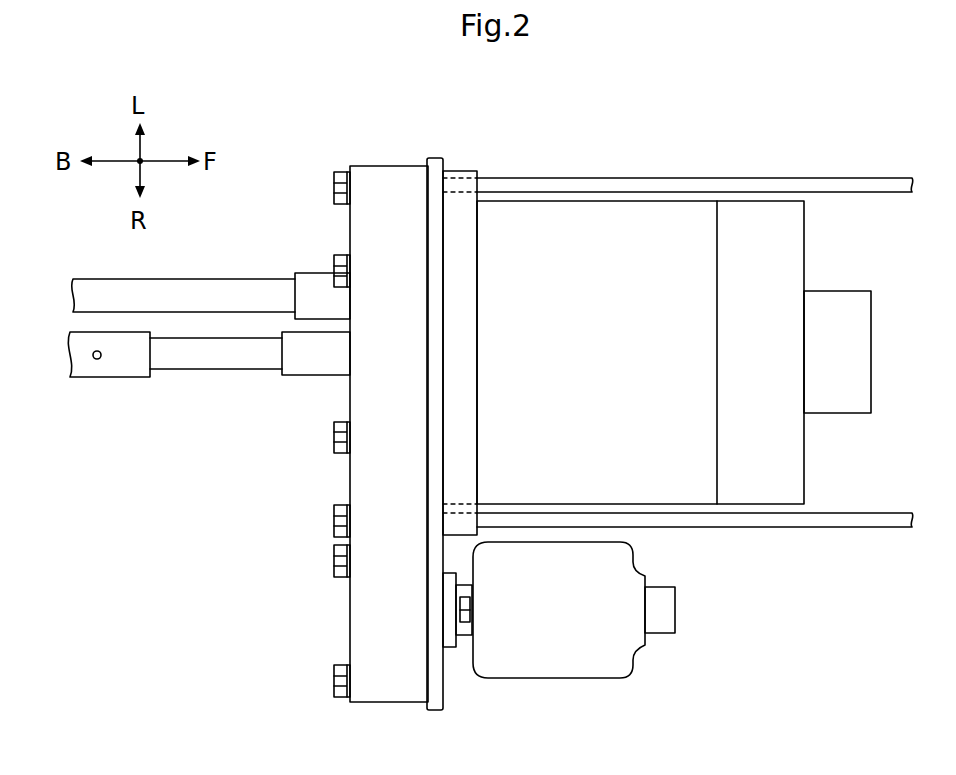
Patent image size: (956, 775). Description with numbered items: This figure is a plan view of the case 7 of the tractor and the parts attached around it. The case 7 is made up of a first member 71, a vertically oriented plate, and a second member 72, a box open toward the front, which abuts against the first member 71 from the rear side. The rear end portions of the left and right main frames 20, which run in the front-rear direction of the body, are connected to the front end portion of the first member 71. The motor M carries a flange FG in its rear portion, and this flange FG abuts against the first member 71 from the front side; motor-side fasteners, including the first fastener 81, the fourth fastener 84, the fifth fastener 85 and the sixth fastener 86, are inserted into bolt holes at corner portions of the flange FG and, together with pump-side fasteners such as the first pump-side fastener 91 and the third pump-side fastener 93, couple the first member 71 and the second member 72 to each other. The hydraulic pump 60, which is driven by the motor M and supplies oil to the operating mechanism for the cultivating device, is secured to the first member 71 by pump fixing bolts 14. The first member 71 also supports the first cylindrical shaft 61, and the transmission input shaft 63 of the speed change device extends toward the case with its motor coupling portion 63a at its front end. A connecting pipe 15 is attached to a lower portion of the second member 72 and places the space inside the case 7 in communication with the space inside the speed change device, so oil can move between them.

The case 7 is at (413, 134).
The second member 72 is at (383, 185).
The first member 71 is at (433, 158).
The flange FG is at (467, 254).
The main frames 20 is at (668, 177).
The motor M is at (780, 248).
The connecting pipe 15 is at (190, 290).
The fourth fastener 84 is at (333, 188).
The fifth fastener 85 is at (333, 270).
The sixth fastener 86 is at (334, 438).
The first fastener 81 is at (334, 518).
The third pump-side fastener 93 is at (334, 560).
The first pump-side fastener 91 is at (334, 680).
The transmission input shaft 63 is at (112, 378).
The motor coupling portion 63a is at (199, 362).
The first cylindrical shaft 61 is at (307, 368).
The pump fixing bolts 14 is at (473, 605).
The hydraulic pump 60 is at (565, 665).